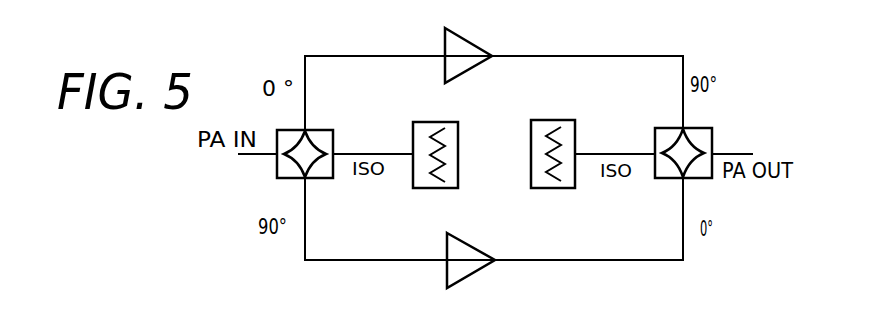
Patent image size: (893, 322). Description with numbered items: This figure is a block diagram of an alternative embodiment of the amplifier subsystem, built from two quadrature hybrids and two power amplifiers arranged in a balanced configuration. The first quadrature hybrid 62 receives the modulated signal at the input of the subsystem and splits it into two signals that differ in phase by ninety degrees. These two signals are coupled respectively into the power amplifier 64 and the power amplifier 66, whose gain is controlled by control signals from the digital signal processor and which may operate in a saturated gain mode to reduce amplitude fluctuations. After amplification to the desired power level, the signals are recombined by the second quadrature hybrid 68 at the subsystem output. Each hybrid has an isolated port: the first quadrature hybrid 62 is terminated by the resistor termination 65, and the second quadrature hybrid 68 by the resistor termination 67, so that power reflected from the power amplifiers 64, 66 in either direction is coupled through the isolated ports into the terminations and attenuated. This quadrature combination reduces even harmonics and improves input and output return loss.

The first quadrature hybrid 62 is at (305, 130).
The power amplifier 64 is at (468, 41).
The resistor termination 65 is at (437, 122).
The power amplifier 66 is at (470, 274).
The resistor termination 67 is at (553, 120).
The second quadrature hybrid 68 is at (665, 128).